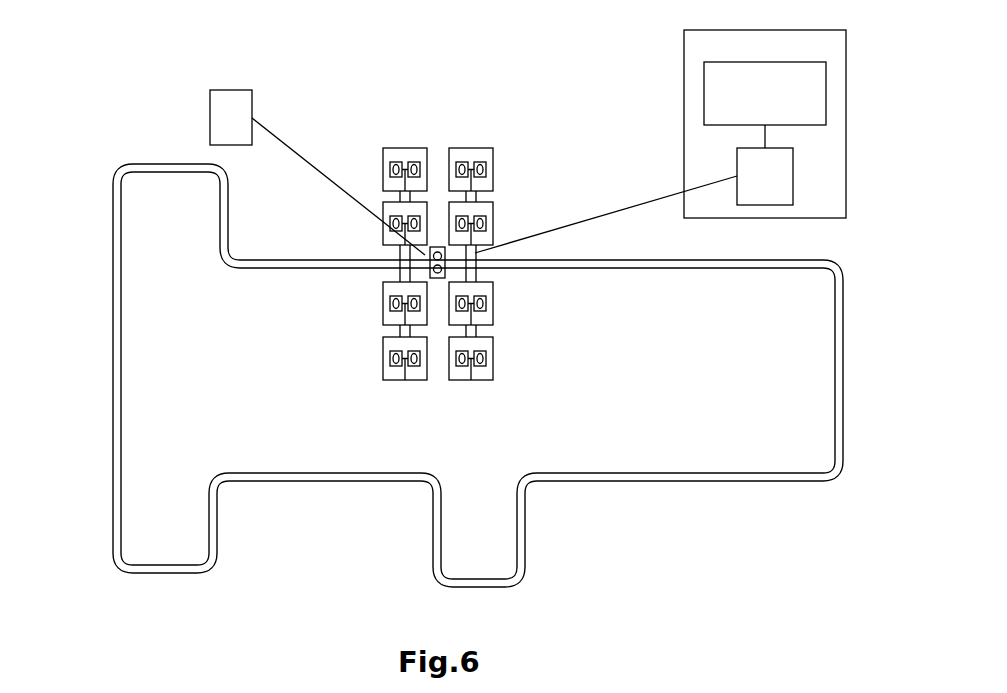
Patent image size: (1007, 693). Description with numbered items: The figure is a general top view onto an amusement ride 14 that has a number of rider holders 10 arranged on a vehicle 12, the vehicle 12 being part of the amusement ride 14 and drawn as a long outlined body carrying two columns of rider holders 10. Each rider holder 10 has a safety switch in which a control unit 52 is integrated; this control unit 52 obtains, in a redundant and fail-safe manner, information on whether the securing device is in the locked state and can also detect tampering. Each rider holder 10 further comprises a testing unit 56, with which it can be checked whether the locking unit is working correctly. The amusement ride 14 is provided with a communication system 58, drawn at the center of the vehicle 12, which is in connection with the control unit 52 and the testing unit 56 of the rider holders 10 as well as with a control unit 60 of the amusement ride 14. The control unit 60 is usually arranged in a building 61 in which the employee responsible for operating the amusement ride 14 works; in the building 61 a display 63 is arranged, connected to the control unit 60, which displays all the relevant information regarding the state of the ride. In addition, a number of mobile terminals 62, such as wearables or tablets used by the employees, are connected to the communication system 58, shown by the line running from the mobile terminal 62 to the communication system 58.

The rider holder 10 is at (496, 163).
The vehicle 12 is at (434, 246).
The amusement ride 14 is at (118, 105).
The control unit 52 is at (394, 164).
The testing unit 56 is at (416, 163).
The communication system 58 is at (400, 272).
The control unit 60 is at (748, 192).
The building 61 is at (660, 141).
The mobile terminals 62 is at (238, 97).
The display 63 is at (748, 108).